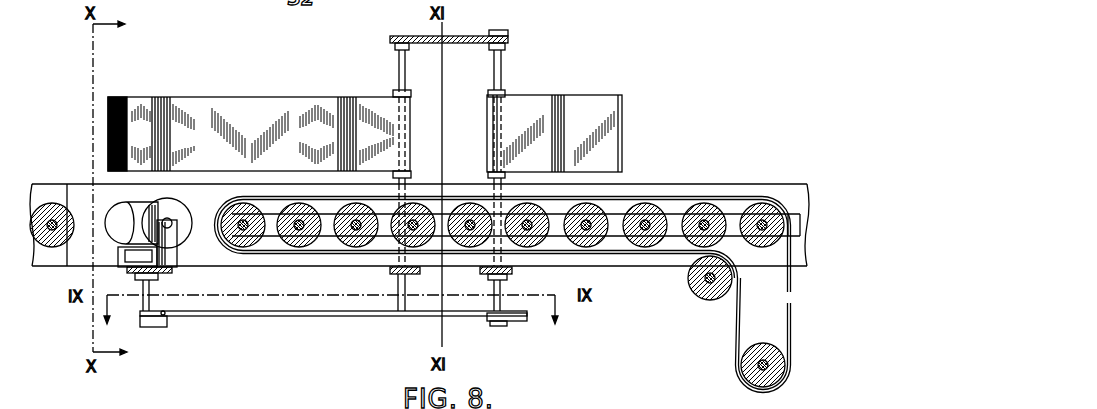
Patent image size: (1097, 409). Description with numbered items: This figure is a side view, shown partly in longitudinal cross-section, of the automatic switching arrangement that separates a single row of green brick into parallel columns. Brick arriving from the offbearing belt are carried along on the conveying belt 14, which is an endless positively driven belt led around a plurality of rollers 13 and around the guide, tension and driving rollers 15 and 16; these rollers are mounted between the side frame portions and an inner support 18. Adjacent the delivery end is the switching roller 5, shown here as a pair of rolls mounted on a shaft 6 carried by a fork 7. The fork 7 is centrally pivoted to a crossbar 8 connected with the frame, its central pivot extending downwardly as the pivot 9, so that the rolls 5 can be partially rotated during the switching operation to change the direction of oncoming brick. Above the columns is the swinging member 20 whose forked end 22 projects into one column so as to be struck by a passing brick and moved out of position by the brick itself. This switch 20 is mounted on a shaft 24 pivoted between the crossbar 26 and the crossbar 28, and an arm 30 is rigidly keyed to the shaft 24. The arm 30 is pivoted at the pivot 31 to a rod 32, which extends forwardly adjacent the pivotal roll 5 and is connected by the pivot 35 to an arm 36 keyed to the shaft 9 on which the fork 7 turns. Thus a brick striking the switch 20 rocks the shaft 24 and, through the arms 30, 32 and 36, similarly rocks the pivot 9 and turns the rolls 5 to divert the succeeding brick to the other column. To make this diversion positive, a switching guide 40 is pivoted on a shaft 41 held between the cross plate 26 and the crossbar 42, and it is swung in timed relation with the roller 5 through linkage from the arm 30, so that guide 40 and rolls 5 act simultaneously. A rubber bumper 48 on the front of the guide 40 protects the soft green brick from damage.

The switching roller 5 is at (110, 212).
The shaft 6 is at (171, 221).
The fork 7 is at (175, 258).
The crossbar 8 is at (129, 280).
The pivot 9 is at (151, 291).
The rollers 13 is at (318, 294).
The belt 14 is at (750, 166).
The guide tension and driving roller 15 is at (697, 313).
The guide tension and driving roller 16 is at (720, 391).
The inner support 18 is at (668, 156).
The swinging member 20 is at (526, 103).
The forked end 22 is at (680, 117).
The shaft 24 is at (485, 78).
The crossbar 26 is at (472, 36).
The crossbar 28 is at (509, 270).
The arm 30 is at (495, 363).
The pivot 31 is at (536, 385).
The rod 32 is at (284, 361).
The pivot 35 is at (232, 352).
The arm 36 is at (188, 383).
The switching guide 40 is at (268, 76).
The shaft 41 is at (360, 68).
The crossbar 42 is at (378, 358).
The rubber bumper 48 is at (113, 97).